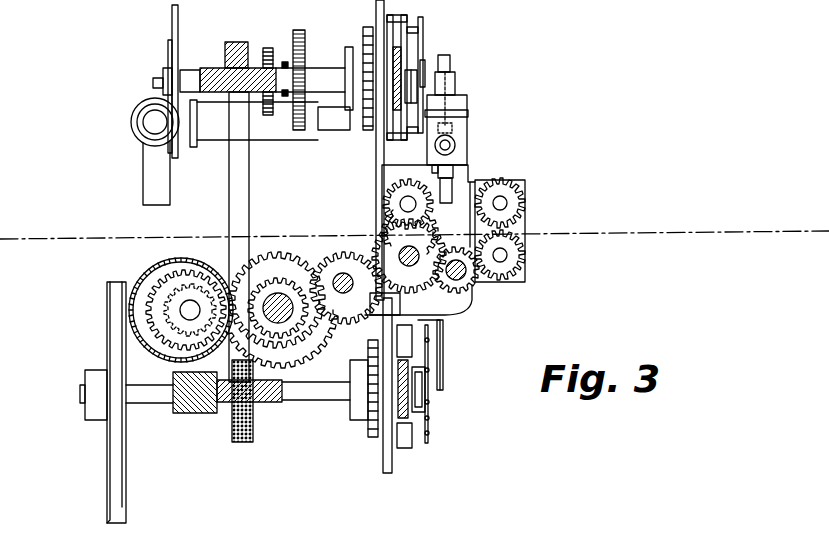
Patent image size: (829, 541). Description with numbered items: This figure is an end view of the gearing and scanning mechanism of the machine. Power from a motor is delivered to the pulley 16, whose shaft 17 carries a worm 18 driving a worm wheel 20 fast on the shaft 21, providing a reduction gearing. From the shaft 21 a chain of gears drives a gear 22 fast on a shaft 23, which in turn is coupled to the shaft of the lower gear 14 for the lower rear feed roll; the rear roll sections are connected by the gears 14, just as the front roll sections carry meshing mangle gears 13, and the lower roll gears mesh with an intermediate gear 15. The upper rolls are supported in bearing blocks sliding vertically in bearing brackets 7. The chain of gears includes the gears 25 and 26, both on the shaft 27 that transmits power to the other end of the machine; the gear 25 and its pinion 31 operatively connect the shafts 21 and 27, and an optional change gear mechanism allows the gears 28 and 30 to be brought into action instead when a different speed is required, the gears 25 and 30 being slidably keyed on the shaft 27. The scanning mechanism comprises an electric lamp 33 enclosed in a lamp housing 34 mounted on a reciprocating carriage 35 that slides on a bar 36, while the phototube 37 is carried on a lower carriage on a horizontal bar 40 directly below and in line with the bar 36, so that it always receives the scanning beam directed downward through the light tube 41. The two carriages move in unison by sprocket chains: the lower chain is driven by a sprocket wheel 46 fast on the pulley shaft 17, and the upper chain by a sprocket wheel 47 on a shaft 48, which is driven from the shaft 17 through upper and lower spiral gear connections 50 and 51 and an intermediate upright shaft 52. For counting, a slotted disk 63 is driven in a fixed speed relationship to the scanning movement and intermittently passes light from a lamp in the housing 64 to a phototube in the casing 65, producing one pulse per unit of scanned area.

The bearing bracket 7 is at (383, 189).
The mangle gear 13 is at (525, 204).
The gear 14 is at (383, 222).
The intermediate gear 15 is at (463, 282).
The pulley 16 is at (107, 458).
The pulley shaft 17 is at (148, 398).
The worm 18 is at (200, 414).
The worm wheel 20 is at (136, 275).
The shaft 21 is at (190, 303).
The gear 22 is at (375, 243).
The shaft 23 is at (413, 268).
The gear 25 is at (264, 258).
The gear 26 is at (300, 280).
The shaft 27 is at (280, 300).
The change gear 28 is at (194, 262).
The change gear 30 is at (318, 348).
The pinion 31 is at (177, 327).
The electric lamp 33 is at (456, 144).
The lamp housing 34 is at (467, 104).
The reciprocating carriage 35 is at (378, 152).
The bar 36 is at (403, 55).
The phototube 37 is at (462, 318).
The horizontal bar 40 is at (398, 412).
The light tube 41 is at (451, 204).
The sprocket wheel 46 is at (368, 428).
The sprocket wheel 47 is at (366, 27).
The shaft 48 is at (322, 76).
The upper spiral gear connection 50 is at (213, 68).
The lower spiral gear connection 51 is at (258, 402).
The intermediate upright shaft 52 is at (249, 182).
The disk 63 is at (172, 20).
The housing 64 is at (211, 137).
The casing 65 is at (133, 116).